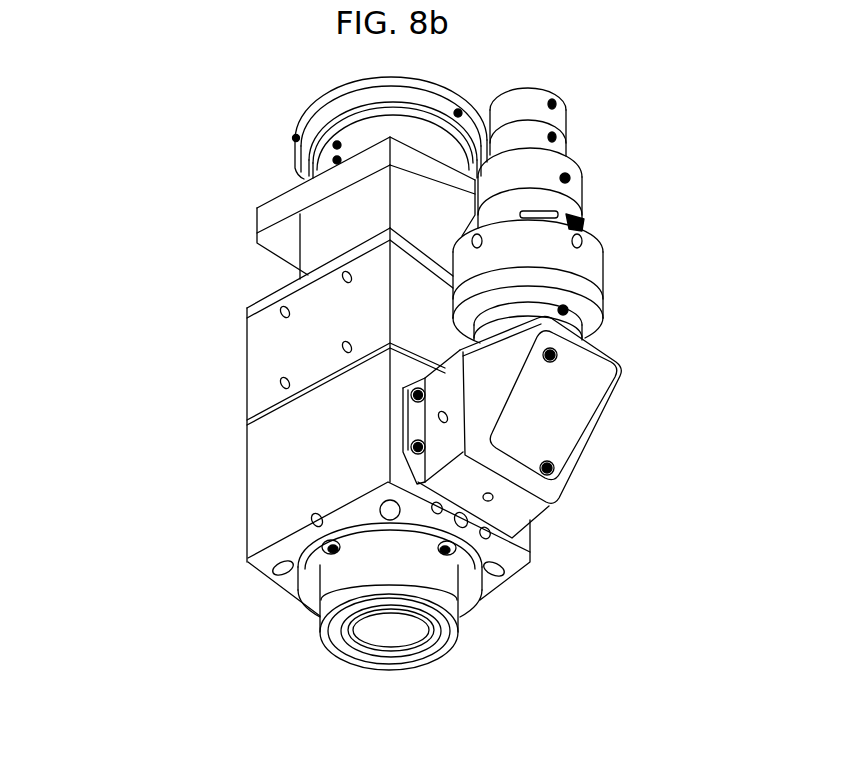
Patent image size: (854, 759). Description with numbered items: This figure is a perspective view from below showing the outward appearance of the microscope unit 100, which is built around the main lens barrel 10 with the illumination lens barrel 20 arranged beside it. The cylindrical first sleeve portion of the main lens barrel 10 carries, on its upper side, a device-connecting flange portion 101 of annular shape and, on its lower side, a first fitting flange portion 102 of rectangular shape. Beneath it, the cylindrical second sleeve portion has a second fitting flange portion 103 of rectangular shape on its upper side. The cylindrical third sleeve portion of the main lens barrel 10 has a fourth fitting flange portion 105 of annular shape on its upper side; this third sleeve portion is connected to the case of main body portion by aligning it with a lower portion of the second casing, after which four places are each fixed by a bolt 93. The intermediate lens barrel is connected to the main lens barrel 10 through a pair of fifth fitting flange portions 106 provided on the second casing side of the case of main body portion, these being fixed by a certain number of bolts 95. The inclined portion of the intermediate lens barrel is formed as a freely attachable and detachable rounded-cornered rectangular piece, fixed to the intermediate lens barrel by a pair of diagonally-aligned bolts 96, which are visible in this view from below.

The microscope unit 100 is at (178, 122).
The device-connecting flange portion 101 is at (447, 90).
The first fitting flange portion 102 is at (284, 197).
The second fitting flange portion 103 is at (265, 223).
The main lens barrel 10 is at (181, 289).
The illumination lens barrel 20 is at (624, 156).
The bolt 93 is at (324, 546).
The bolt 95 is at (427, 391).
The bolt 96 is at (557, 470).
The fourth fitting flange portion 105 is at (303, 590).
The fifth fitting flange portion 106 is at (422, 430).